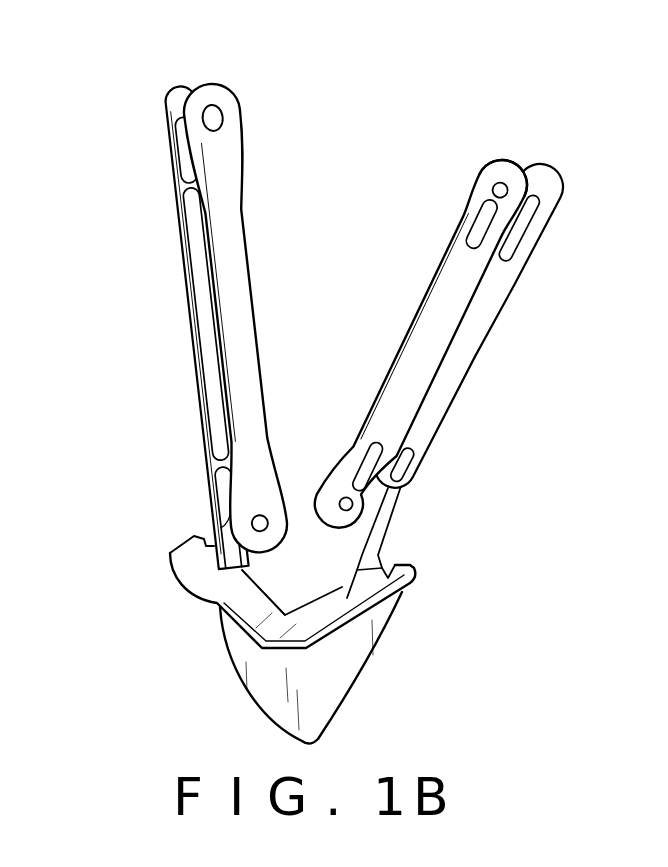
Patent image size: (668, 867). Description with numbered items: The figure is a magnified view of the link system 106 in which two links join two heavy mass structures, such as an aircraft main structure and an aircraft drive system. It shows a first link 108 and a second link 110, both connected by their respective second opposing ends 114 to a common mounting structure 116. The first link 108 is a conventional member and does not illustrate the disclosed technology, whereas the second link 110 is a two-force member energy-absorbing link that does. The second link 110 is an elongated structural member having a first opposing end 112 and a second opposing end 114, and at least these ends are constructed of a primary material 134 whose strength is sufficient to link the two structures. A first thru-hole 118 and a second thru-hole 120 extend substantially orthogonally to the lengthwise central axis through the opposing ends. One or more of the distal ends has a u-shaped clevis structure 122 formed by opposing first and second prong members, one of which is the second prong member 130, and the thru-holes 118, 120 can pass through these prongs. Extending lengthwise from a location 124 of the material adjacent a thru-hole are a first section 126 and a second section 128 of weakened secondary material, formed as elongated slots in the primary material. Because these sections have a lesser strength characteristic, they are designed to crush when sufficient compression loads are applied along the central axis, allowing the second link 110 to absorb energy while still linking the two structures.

The link system 106 is at (366, 378).
The first link 108 is at (254, 129).
The second link 110 is at (465, 297).
The first opposing end 112 is at (507, 275).
The second opposing end 114 is at (332, 560).
The mounting structure 116 is at (422, 632).
The first thru-hole 118 is at (500, 190).
The second thru-hole 120 is at (345, 503).
The u-shaped clevis structure 122 is at (400, 487).
The location of material proximate the thru-hole 124 is at (368, 466).
The first section 126 is at (519, 228).
The second section 128 is at (402, 464).
The second prong member 130 is at (507, 174).
The primary material 134 is at (482, 223).